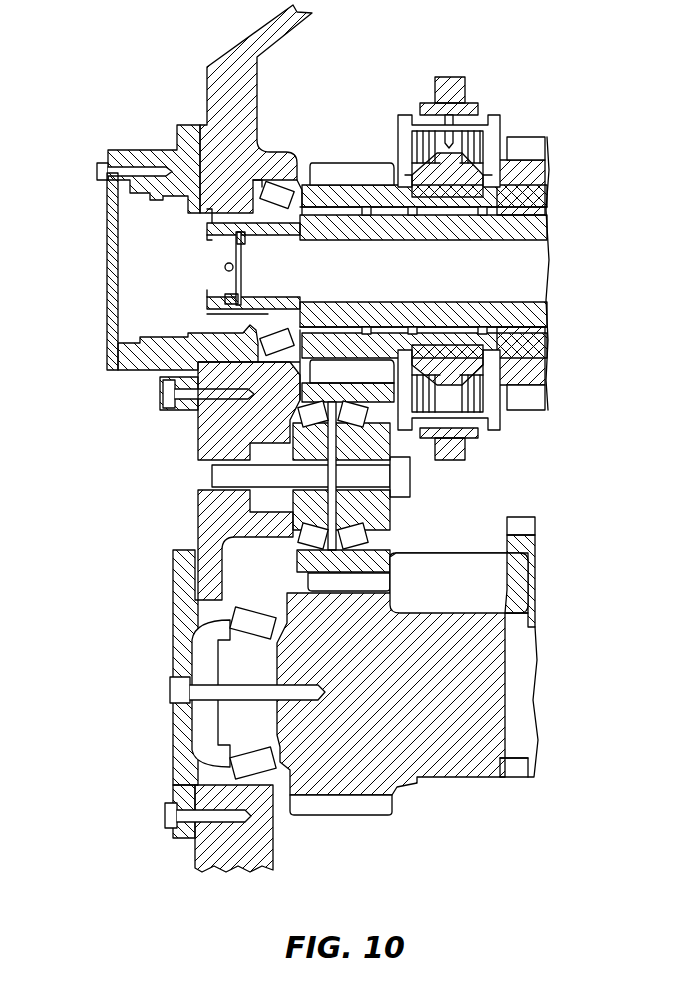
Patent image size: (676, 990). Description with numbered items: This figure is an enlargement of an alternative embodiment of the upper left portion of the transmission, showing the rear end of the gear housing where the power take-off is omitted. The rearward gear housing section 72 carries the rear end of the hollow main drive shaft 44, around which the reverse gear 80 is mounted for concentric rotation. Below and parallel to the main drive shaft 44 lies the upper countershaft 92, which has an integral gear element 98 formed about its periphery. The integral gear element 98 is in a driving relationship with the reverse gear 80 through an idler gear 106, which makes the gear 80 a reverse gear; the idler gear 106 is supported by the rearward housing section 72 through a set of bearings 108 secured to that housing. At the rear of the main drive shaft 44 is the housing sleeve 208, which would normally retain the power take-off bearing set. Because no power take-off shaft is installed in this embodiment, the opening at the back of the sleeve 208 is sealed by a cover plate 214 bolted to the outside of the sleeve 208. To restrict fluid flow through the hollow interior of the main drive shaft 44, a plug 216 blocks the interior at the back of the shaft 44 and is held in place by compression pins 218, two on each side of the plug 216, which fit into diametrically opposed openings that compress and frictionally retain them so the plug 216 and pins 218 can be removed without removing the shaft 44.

The rearward gear housing section 72 is at (232, 38).
The housing sleeve 208 is at (158, 152).
The cover plate 214 is at (105, 232).
The plug 216 is at (243, 256).
The compression pins 218 is at (226, 266).
The reverse gear 80 is at (358, 165).
The main drive shaft 44 is at (542, 318).
The set of bearings 108 is at (313, 427).
The idler gear 106 is at (393, 558).
The upper countershaft 92 is at (458, 704).
The integral gear element 98 is at (340, 818).